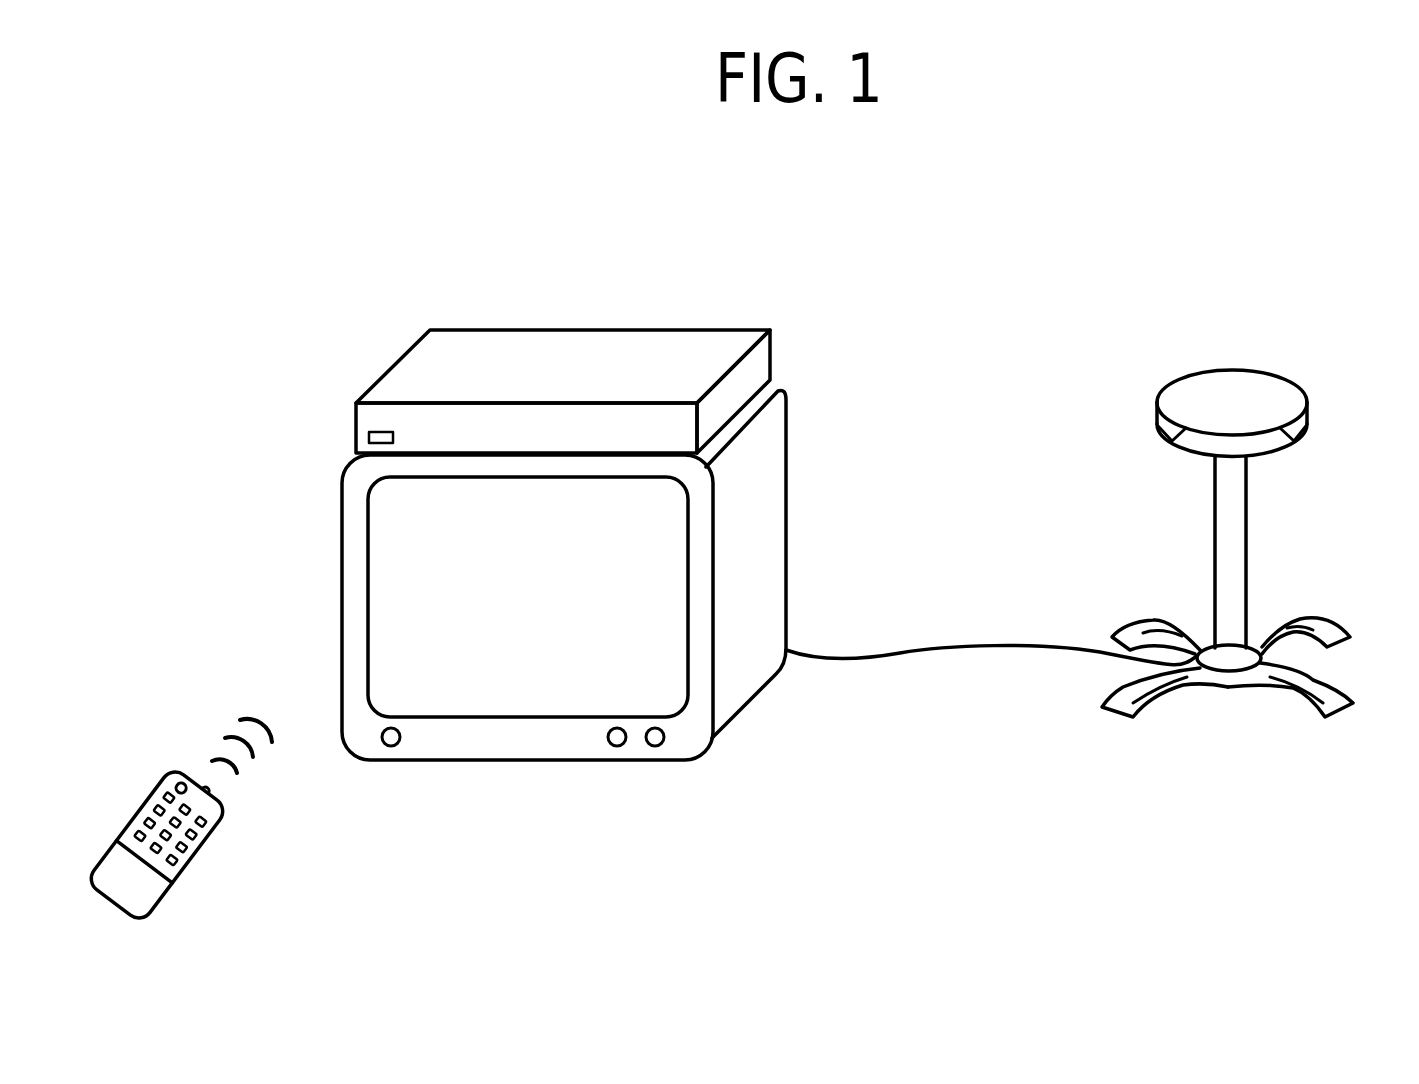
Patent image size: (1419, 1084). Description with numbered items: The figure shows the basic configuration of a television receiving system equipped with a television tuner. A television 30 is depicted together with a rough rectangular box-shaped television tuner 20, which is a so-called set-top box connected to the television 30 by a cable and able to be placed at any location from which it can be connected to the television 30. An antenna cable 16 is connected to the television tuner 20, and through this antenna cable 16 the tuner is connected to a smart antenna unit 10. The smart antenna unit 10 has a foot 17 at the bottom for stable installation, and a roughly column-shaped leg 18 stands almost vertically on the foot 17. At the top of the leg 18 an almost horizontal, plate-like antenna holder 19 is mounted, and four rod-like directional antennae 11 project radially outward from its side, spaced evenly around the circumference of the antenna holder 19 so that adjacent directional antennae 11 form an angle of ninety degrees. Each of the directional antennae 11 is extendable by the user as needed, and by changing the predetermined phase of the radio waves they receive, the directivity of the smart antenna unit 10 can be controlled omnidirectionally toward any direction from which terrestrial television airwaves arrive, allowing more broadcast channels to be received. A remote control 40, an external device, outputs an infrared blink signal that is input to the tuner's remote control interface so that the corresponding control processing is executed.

The smart antenna unit 10 is at (1252, 553).
The directional antennae 11 is at (1290, 368).
The antenna cable 16 is at (953, 647).
The foot 17 is at (1297, 692).
The leg 18 is at (1230, 540).
The antenna holder 19 is at (1230, 370).
The television tuner 20 is at (717, 328).
The television 30 is at (785, 527).
The remote control 40 is at (193, 863).